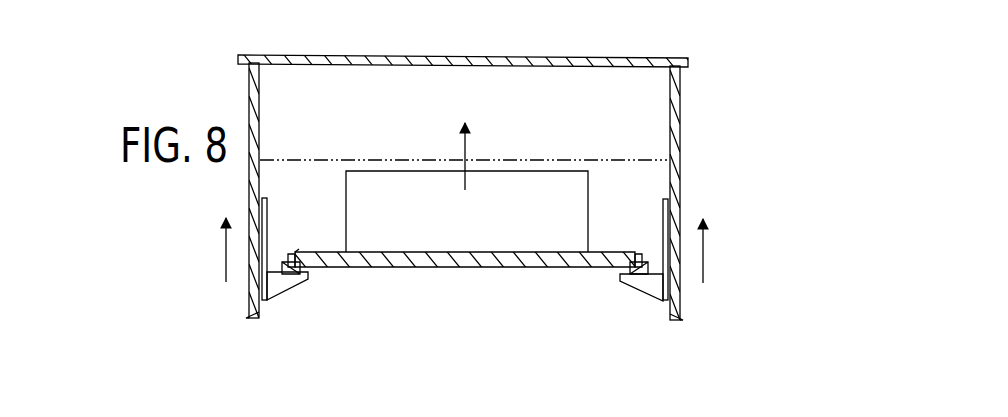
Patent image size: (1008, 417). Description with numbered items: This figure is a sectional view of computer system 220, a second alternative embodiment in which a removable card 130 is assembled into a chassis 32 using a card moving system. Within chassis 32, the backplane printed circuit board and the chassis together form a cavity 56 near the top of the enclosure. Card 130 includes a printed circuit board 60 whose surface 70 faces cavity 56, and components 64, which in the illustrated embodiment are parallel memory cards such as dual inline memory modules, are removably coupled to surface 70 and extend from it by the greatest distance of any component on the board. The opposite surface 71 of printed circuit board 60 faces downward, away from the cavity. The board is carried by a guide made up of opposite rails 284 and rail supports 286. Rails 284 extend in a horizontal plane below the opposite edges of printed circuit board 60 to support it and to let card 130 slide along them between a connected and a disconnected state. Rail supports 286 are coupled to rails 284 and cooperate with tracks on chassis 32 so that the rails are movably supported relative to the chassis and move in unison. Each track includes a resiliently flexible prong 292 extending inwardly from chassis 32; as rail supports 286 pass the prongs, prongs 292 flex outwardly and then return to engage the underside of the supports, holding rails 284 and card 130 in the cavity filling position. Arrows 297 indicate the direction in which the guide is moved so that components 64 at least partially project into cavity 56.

The computer system 220 is at (496, 175).
The chassis 32 is at (468, 161).
The cavity 56 is at (316, 77).
The arrows 297 is at (226, 252).
The components 64 is at (345, 228).
The surface 70 is at (323, 252).
The surface 71 is at (397, 267).
The printed circuit board 60 is at (464, 282).
The card 130 is at (499, 270).
The resiliently flexible prong 292 is at (268, 203).
The rails 284 is at (308, 270).
The rail supports 286 is at (290, 288).